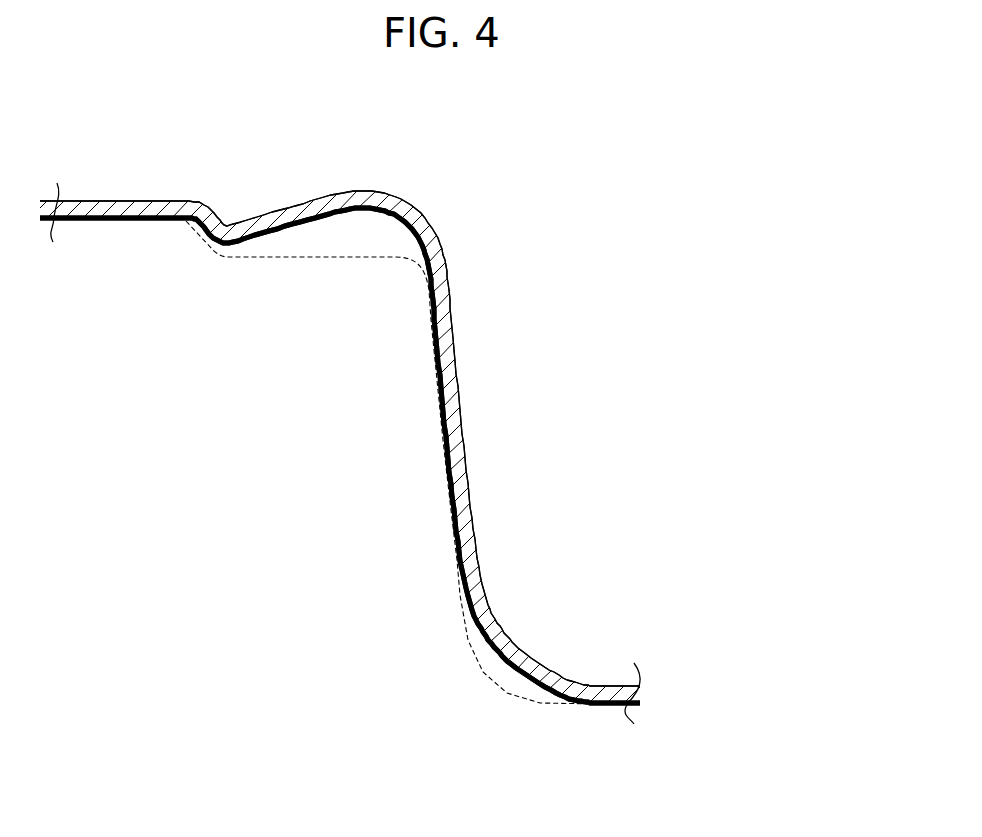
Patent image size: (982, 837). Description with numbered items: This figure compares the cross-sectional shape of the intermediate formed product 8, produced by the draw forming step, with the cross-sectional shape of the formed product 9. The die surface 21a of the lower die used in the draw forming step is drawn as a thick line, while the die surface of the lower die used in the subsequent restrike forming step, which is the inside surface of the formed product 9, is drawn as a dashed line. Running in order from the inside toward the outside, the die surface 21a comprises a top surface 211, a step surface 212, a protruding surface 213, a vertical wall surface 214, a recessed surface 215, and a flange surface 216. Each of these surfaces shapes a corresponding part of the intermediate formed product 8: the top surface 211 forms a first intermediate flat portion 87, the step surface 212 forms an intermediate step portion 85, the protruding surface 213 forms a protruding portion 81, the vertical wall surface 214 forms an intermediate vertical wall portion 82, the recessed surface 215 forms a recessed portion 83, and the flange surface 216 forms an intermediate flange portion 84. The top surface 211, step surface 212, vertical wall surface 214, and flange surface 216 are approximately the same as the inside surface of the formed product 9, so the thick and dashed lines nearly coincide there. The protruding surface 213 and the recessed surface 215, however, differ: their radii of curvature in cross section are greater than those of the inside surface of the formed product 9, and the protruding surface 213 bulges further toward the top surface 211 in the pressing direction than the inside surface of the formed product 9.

The intermediate formed product 8 is at (622, 370).
The die surface 21a is at (528, 129).
The formed product 9 is at (528, 172).
The protruding portion 81 is at (386, 193).
The intermediate vertical wall portion 82 is at (461, 472).
The recessed portion 83 is at (490, 688).
The intermediate flange portion 84 is at (600, 684).
The intermediate step portion 85 is at (217, 206).
The first intermediate flat portion 87 is at (148, 202).
The top surface 211 is at (131, 221).
The step surface 212 is at (212, 248).
The protruding surface 213 is at (357, 214).
The vertical wall surface 214 is at (449, 463).
The recessed surface 215 is at (492, 687).
The flange surface 216 is at (608, 706).